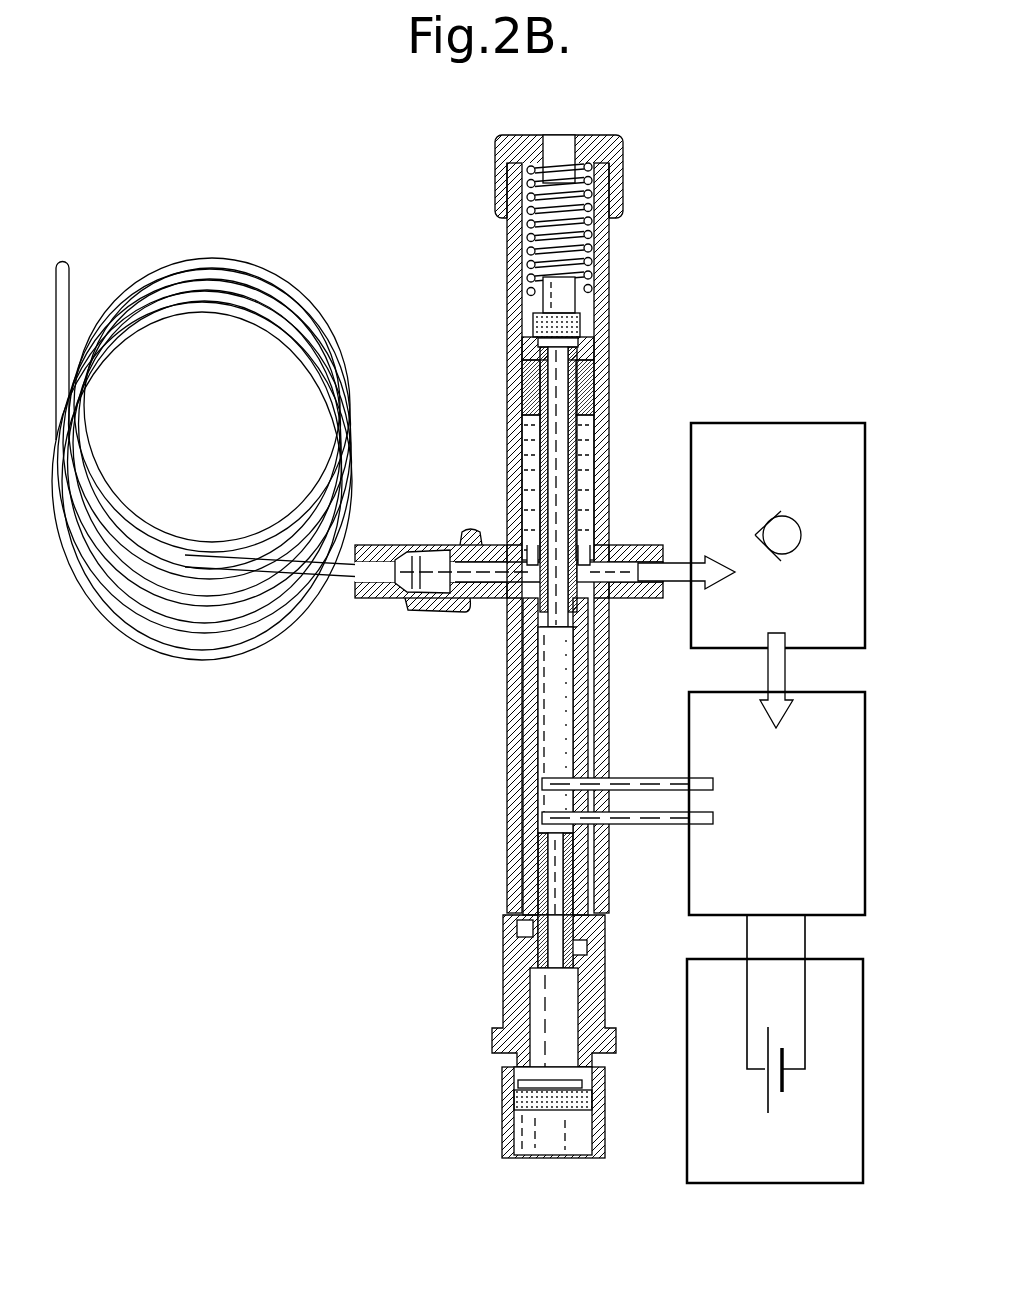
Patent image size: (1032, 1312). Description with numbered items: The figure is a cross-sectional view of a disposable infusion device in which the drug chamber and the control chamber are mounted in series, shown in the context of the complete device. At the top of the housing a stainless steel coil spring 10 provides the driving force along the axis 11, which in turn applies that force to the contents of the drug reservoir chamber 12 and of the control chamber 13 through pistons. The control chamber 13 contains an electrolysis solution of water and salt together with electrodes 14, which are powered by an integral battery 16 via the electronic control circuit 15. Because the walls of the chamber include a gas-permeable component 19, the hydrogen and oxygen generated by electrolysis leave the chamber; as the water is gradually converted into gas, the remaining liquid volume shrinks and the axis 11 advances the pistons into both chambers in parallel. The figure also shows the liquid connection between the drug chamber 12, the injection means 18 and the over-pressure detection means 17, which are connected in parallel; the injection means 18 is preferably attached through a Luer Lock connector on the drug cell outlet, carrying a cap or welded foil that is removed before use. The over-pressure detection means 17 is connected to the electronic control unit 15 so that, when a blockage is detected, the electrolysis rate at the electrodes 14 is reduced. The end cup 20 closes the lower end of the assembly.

The spring 10 is at (609, 232).
The axis 11 is at (558, 455).
The drug reservoir chamber 12 is at (530, 455).
The control chamber 13 is at (558, 725).
The electrodes 14 is at (655, 815).
The electronic control circuit 15 is at (841, 852).
The battery 16 is at (831, 1102).
The over-pressure detection means 17 is at (799, 445).
The injection means 18 is at (432, 600).
The gas-permeable component 19 is at (545, 322).
The end cup 20 is at (605, 1143).